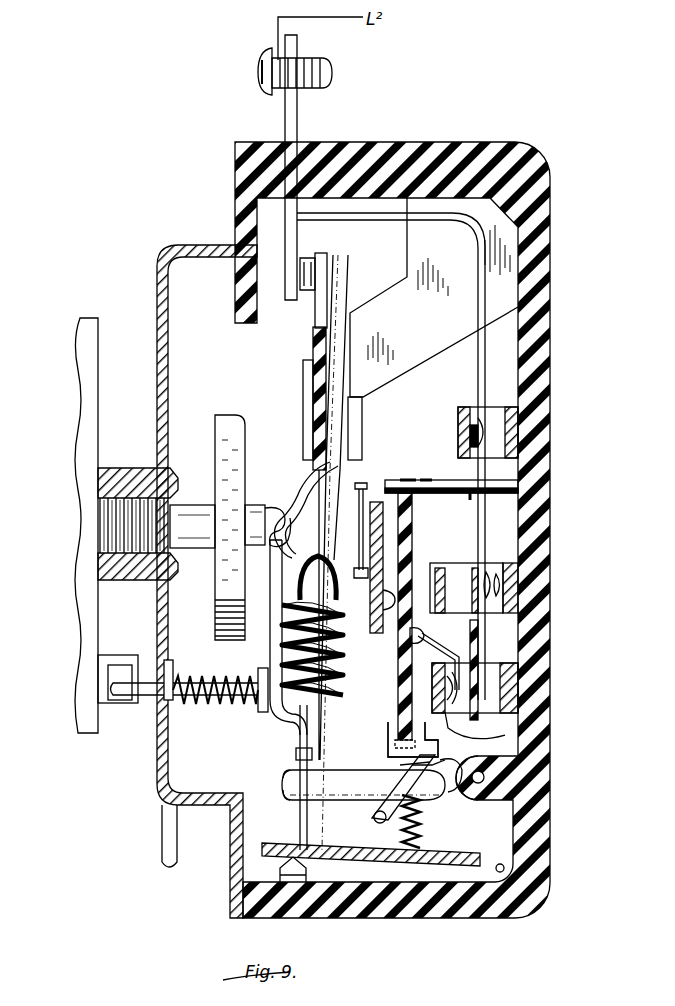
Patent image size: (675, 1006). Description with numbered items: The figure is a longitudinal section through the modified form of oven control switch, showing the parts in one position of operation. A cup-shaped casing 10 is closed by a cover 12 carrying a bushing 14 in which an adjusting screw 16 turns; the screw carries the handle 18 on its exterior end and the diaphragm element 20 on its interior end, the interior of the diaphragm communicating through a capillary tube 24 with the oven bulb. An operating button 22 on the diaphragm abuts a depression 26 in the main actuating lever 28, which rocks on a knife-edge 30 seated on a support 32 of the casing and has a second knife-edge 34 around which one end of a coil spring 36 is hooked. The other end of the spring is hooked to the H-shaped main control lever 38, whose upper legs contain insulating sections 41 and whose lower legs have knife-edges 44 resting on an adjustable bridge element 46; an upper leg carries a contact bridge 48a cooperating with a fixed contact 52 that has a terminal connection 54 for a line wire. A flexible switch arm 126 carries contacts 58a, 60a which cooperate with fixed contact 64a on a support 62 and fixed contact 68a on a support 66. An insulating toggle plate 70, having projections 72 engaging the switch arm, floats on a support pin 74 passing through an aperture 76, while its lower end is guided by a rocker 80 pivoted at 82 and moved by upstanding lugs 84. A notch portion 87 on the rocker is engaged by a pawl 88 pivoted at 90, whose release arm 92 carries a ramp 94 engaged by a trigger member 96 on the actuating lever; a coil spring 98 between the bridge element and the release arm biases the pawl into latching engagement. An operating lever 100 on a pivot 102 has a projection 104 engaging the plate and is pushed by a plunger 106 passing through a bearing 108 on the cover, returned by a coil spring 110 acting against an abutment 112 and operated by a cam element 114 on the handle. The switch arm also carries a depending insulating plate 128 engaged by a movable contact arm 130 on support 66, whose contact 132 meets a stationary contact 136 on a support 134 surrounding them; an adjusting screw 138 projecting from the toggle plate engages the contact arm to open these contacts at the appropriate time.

The casing 10 is at (552, 183).
The cover 12 is at (157, 278).
The bushing 14 is at (124, 482).
The adjusting screw 16 is at (135, 577).
The handle 18 is at (97, 320).
The diaphragm element 20 is at (228, 430).
The operating button 22 is at (266, 512).
The capillary tube 24 is at (162, 840).
The depression 26 is at (278, 556).
The main actuating lever 28 is at (276, 651).
The knife-edge 30 is at (312, 472).
The support 32 is at (302, 392).
The knife-edge 34 is at (292, 733).
The coil spring 36 is at (337, 653).
The main control lever 38 is at (322, 482).
The insulating section 41 is at (312, 340).
The knife-edge 44 is at (292, 797).
The adjustable bridge element 46 is at (290, 830).
The double-pole contact bridge 48a is at (316, 310).
The fixed contact 52 is at (309, 254).
The terminal connection 54 is at (326, 91).
The contact 58a is at (478, 425).
The contact 60a is at (497, 568).
The support 62 is at (458, 437).
The fixed contact 64a is at (464, 430).
The support 66 is at (520, 603).
The fixed contact 68a is at (502, 586).
The toggle plate 70 is at (408, 478).
The projections 72 is at (470, 496).
The support pin 74 is at (520, 487).
The aperture 76 is at (428, 480).
The rocker 80 is at (388, 778).
The pivot 82 is at (376, 822).
The upstanding lugs 84 is at (390, 740).
The notch portion 87 is at (410, 765).
The pawl 88 is at (455, 794).
The pivot 90 is at (545, 777).
The release arm 92 is at (430, 792).
The ramp 94 is at (292, 778).
The trigger member 96 is at (296, 756).
The coil spring 98 is at (425, 840).
The operating lever 100 is at (373, 604).
The pivot 102 is at (395, 475).
The projection 104 is at (388, 574).
The plunger 106 is at (152, 696).
The bearing 108 is at (258, 708).
The coil spring 110 is at (235, 680).
The abutment 112 is at (168, 672).
The cam element 114 is at (110, 706).
The flexible switch arm 126 is at (478, 360).
The insulating plate 128 is at (480, 637).
The movable contact arm 130 is at (457, 661).
The contact 132 is at (460, 690).
The support 134 is at (512, 700).
The stationary contact 136 is at (505, 735).
The adjusting screw 138 is at (425, 637).